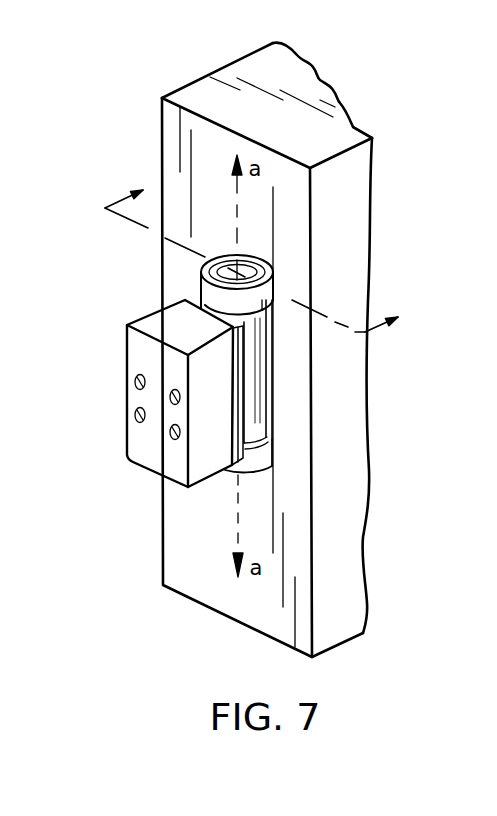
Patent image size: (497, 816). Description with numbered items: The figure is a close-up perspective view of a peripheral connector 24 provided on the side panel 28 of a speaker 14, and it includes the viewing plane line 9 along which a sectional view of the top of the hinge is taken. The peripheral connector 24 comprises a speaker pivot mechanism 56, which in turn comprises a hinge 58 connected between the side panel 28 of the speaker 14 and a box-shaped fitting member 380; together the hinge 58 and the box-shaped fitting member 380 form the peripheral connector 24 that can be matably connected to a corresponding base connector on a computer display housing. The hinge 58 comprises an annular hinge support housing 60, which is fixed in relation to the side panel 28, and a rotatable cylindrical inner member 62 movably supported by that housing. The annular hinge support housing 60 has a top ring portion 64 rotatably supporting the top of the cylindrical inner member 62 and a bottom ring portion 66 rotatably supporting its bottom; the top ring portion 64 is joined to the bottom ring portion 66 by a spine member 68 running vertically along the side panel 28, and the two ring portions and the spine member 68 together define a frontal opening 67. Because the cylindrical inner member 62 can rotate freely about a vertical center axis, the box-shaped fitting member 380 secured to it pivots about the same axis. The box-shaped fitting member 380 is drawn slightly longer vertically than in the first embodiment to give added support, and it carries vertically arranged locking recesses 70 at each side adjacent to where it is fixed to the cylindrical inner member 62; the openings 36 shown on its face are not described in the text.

The speaker 14 is at (257, 70).
The side panel 28 is at (180, 133).
The viewing plane line 9 is at (255, 262).
The speaker pivot mechanism 56 is at (222, 245).
The hinge 58 is at (257, 256).
The top ring portion 64 is at (248, 301).
The cylindrical inner member 62 is at (255, 395).
The frontal opening 67 is at (255, 348).
The spine member 68 is at (270, 382).
The bottom ring portion 66 is at (261, 451).
The annular hinge support housing 60 is at (291, 462).
The locking recesses 70 is at (237, 360).
The box-shaped fitting member 380 is at (150, 462).
The mounting holes 36 is at (134, 415).
The peripheral connector 24 is at (208, 498).